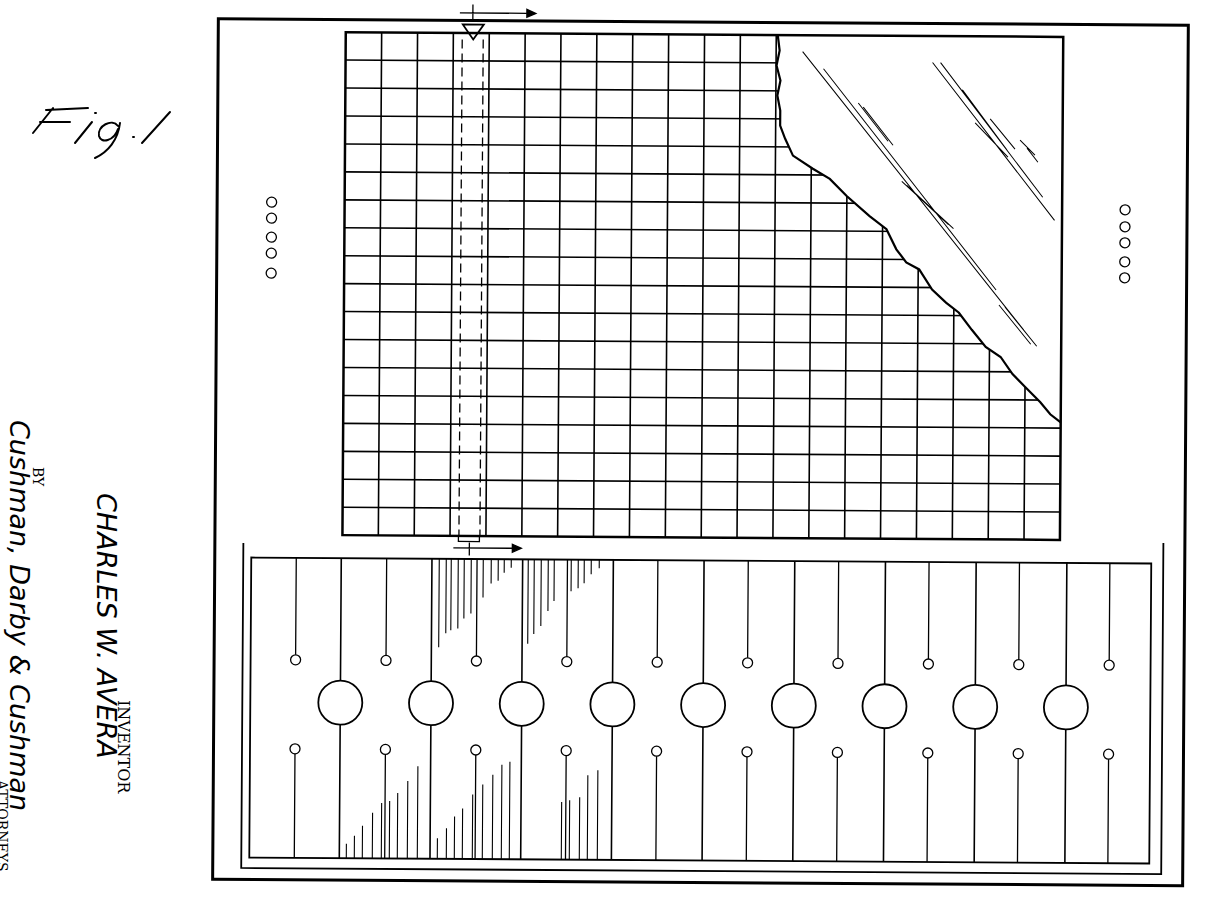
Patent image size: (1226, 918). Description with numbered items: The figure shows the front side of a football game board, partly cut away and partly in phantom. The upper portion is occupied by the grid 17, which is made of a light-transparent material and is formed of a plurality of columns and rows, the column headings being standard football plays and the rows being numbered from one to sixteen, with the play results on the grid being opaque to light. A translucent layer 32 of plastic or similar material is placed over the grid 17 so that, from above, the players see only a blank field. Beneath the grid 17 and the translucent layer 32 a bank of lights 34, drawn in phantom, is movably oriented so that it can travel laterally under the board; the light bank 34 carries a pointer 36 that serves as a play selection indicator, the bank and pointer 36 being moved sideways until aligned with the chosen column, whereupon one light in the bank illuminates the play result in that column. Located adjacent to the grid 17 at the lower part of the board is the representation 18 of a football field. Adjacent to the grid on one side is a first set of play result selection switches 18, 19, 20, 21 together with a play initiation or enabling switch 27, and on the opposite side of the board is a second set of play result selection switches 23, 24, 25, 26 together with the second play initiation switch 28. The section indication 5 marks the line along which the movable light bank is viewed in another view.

The section line 5- 5 is at (506, 282).
The grid 17 is at (356, 86).
The representation of a football field 18 is at (312, 585).
The play result selection switch 19 is at (274, 218).
The play result selection switch 20 is at (275, 238).
The play result selection switch 21 is at (275, 254).
The play initiation switch 27 is at (275, 275).
The play result selection switch 23 is at (1128, 205).
The play result selection switch 24 is at (1128, 222).
The play result selection switch 25 is at (1128, 239).
The play result selection switch 26 is at (1128, 258).
The play initiation switch 28 is at (1128, 274).
The translucent layer 32 is at (1033, 112).
The bank of lights 34 is at (482, 81).
The pointer 36 is at (481, 30).